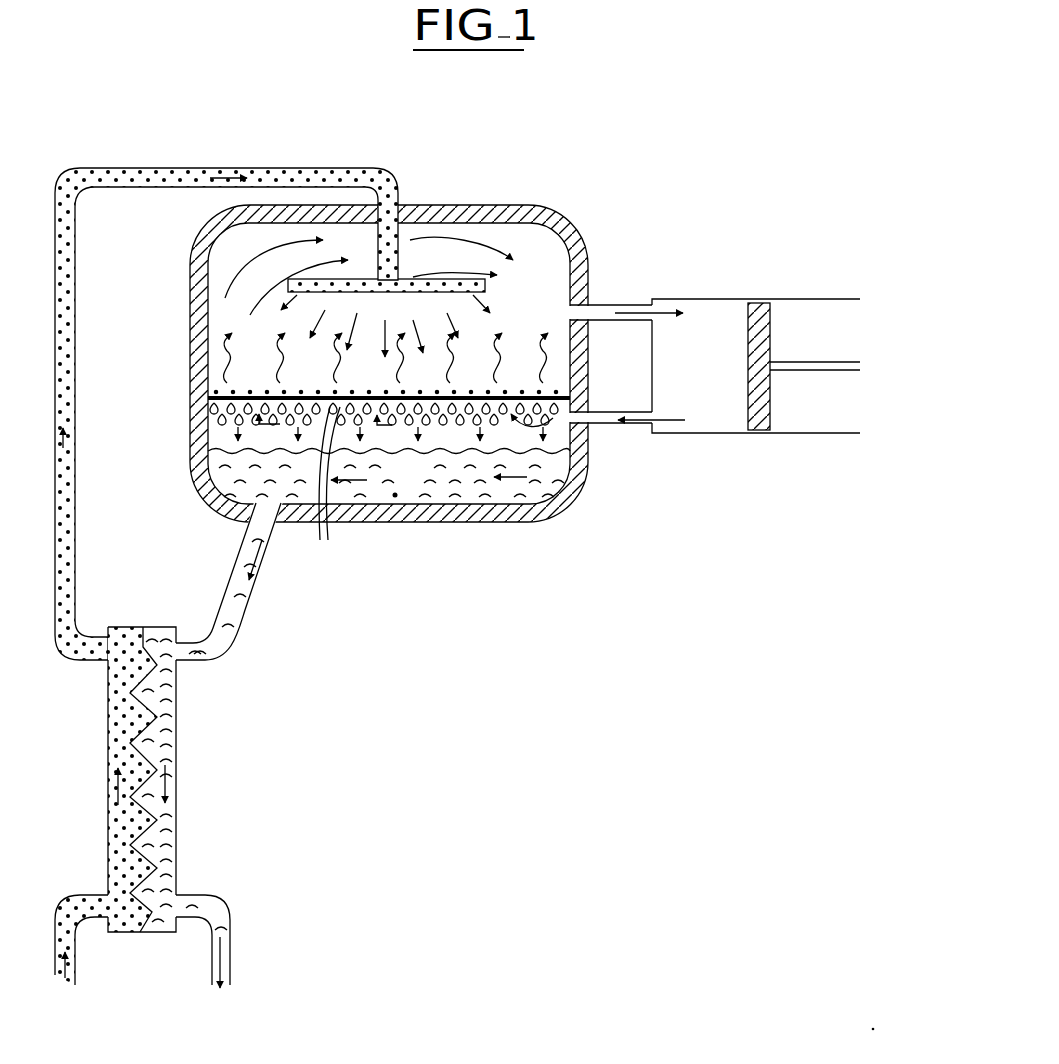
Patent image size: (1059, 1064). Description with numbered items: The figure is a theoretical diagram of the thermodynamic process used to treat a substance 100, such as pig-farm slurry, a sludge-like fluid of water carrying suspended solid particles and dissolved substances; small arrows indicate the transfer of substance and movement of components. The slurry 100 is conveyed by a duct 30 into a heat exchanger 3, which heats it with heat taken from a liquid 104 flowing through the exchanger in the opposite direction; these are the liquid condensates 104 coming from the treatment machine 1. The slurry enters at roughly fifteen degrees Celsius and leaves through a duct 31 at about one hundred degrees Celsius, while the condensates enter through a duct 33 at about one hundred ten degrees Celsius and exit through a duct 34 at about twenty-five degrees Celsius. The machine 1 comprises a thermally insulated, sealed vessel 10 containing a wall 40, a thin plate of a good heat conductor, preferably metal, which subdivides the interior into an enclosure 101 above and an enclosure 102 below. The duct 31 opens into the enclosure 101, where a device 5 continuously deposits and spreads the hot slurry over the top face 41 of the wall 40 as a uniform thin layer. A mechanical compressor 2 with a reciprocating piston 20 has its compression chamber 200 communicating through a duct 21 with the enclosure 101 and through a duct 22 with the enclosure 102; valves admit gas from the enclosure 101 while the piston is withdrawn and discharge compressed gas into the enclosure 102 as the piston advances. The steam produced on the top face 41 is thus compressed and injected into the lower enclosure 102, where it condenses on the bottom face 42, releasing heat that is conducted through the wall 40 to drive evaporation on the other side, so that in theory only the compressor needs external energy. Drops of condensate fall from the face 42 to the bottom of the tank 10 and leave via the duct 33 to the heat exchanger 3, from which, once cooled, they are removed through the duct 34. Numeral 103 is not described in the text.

The treatment machine 1 is at (386, 359).
The mechanical compressor 2 is at (715, 333).
The heat exchanger 3 is at (173, 832).
The device 5 is at (435, 278).
The vessel 10 is at (389, 527).
The piston 20 is at (765, 418).
The duct 21 is at (610, 303).
The duct 22 is at (611, 428).
The duct 30 is at (58, 955).
The duct 31 is at (77, 428).
The duct 33 is at (238, 582).
The duct 34 is at (231, 960).
The wall 40 is at (354, 452).
The top face 41 is at (482, 398).
The bottom face 42 is at (411, 402).
The substance to be treated 100 is at (115, 825).
The enclosure 101 is at (548, 262).
The enclosure 102 is at (513, 443).
The overflow pipe 103 is at (318, 490).
The liquid condensates 104 is at (375, 482).
The compression chamber 200 is at (720, 376).